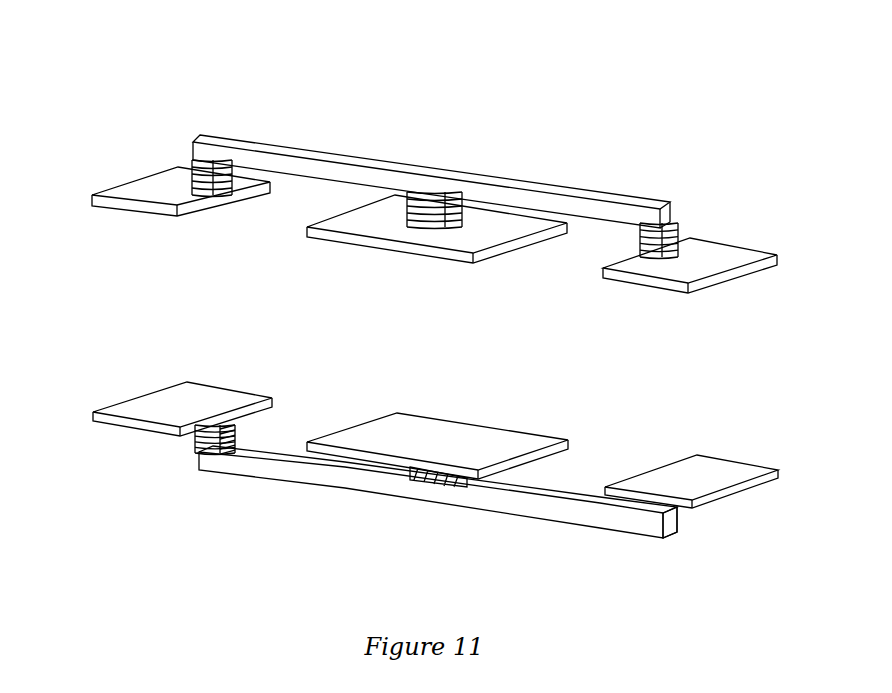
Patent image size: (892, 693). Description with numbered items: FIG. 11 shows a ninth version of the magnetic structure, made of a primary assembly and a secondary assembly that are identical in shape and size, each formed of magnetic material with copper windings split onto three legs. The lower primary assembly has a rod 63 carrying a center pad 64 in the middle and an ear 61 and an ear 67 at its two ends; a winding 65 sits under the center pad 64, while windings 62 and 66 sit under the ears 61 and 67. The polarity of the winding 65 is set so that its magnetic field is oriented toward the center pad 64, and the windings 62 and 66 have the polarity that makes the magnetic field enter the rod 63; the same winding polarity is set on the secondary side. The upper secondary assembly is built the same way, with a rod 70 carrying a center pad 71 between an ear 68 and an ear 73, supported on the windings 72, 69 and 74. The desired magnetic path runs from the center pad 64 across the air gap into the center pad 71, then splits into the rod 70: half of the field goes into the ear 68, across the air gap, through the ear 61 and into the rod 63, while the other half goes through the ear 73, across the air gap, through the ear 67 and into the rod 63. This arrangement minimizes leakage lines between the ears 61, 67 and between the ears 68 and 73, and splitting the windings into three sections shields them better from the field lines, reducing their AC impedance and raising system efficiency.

The spring 74 is at (193, 160).
The ear 73 is at (155, 190).
The rod 70 is at (503, 178).
The spring 72 is at (410, 220).
The center pad 71 is at (493, 223).
The spring 69 is at (677, 228).
The ear 68 is at (718, 260).
The ear 67 is at (180, 408).
The winding 66 is at (237, 420).
The center pad 64 is at (435, 438).
The winding 65 is at (428, 485).
The rod 63 is at (530, 508).
The ear 61 is at (697, 477).
The winding 62 is at (678, 508).